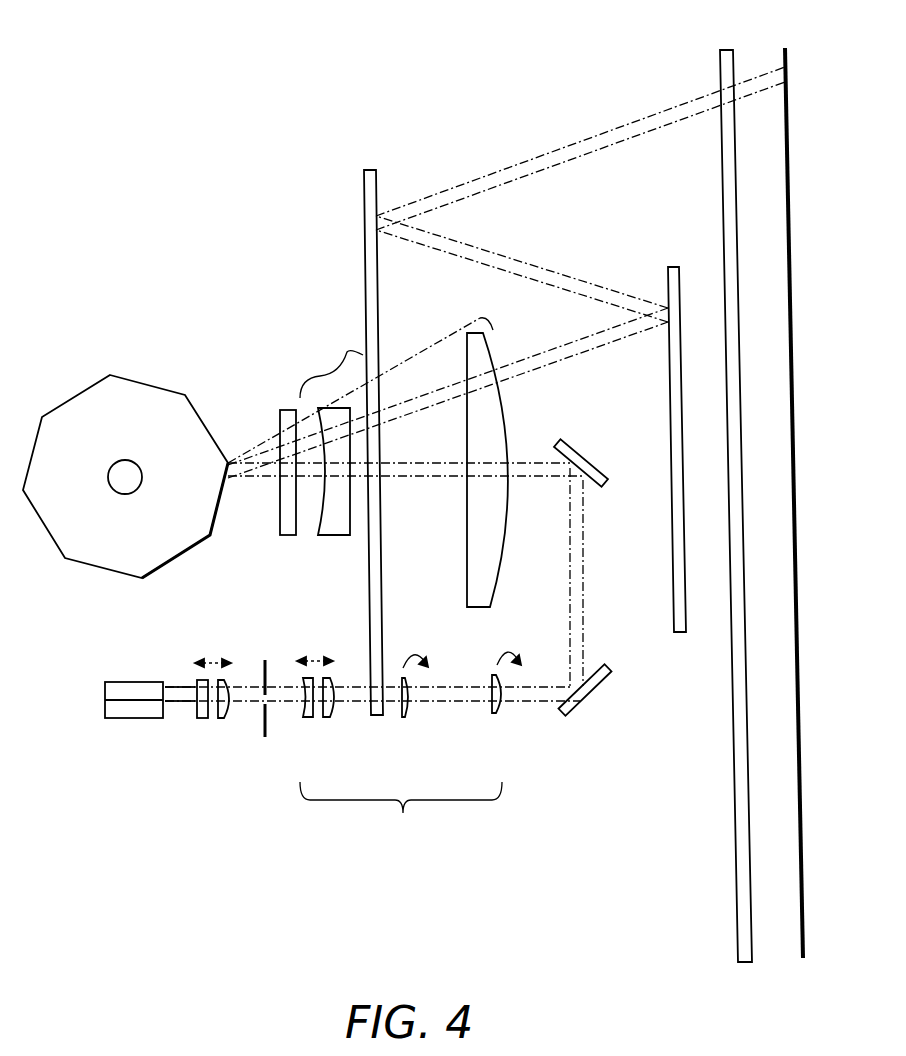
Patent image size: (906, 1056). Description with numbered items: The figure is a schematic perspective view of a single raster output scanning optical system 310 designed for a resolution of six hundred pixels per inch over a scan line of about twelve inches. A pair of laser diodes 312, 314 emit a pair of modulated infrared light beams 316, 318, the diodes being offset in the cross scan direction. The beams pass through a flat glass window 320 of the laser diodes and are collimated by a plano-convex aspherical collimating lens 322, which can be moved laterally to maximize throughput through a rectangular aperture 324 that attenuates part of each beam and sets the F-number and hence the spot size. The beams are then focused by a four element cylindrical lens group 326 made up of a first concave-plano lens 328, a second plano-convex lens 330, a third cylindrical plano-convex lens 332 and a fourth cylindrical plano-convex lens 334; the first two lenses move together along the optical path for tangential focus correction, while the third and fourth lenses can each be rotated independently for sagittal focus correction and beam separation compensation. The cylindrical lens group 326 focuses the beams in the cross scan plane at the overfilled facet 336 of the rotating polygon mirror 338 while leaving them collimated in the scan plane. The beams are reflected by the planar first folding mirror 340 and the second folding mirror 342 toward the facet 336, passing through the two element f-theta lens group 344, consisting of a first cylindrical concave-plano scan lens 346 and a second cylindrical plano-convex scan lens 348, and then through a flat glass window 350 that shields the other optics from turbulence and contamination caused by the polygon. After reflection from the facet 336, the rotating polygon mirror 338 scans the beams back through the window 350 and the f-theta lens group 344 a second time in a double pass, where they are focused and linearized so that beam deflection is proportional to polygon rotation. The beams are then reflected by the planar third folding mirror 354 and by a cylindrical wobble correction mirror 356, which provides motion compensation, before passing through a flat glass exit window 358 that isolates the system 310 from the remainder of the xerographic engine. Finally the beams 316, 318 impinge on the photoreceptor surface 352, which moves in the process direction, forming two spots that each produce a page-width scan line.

The optical system 310 is at (163, 155).
The laser diode 312 is at (137, 682).
The laser diode 314 is at (137, 720).
The light beam 316 is at (180, 678).
The light beam 318 is at (180, 725).
The glass window 320 is at (203, 720).
The collimating lens 322 is at (223, 720).
The aperture 324 is at (260, 657).
The cylindrical lens group 326 is at (423, 851).
The first concave-plano lens 328 is at (308, 718).
The second plano-convex lens 330 is at (328, 718).
The third cylindrical plano-convex lens 332 is at (403, 718).
The fourth cylindrical plano-convex lens 334 is at (497, 715).
The facet 336 is at (220, 515).
The rotating polygon mirror 338 is at (93, 392).
The first folding mirror 340 is at (590, 698).
The second folding mirror 342 is at (585, 463).
The f-theta lens group 344 is at (356, 344).
The first scan lens 346 is at (320, 533).
The second scan lens 348 is at (468, 540).
The glass window 350 is at (278, 532).
The photoreceptor surface 352 is at (780, 58).
The third folding mirror 354 is at (675, 268).
The cylindrical wobble correction mirror 356 is at (362, 170).
The exit window 358 is at (728, 48).